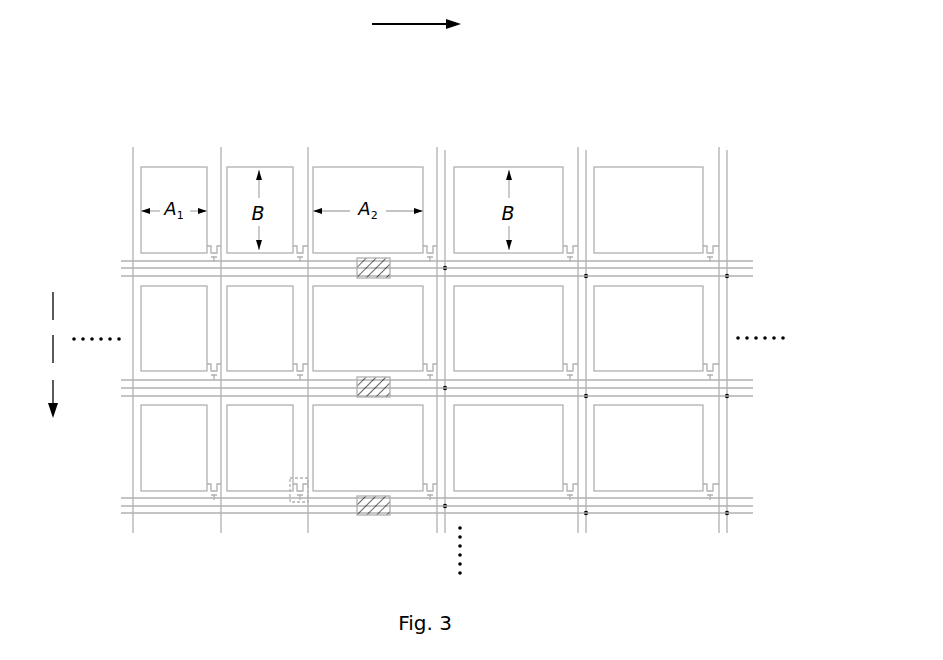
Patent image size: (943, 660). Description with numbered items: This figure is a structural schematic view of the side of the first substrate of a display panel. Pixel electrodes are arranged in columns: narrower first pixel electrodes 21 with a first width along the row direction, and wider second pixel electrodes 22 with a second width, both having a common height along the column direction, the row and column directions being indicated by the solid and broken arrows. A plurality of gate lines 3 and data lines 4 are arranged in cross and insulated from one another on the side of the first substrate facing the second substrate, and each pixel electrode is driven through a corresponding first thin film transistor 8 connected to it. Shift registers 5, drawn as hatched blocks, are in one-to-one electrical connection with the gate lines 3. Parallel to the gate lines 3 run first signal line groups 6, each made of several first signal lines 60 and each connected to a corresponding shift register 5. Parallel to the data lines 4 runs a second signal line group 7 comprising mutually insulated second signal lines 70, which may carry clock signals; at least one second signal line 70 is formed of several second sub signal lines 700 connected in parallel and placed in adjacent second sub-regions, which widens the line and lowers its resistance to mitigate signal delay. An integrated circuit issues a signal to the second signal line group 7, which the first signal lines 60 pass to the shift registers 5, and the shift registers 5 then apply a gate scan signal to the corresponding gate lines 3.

The gate line 3 is at (740, 261).
The data line 4 is at (133, 168).
The shift register 5 is at (367, 516).
The first signal line group 6 is at (791, 285).
The second signal line group 7 is at (483, 64).
The first thin film transistor 8 is at (300, 502).
The first pixel electrode 21 is at (162, 167).
The second pixel electrode 22 is at (340, 167).
The first signal line 60 is at (745, 268).
The second signal line 70 is at (690, 108).
The second sub signal line 700 is at (584, 150).